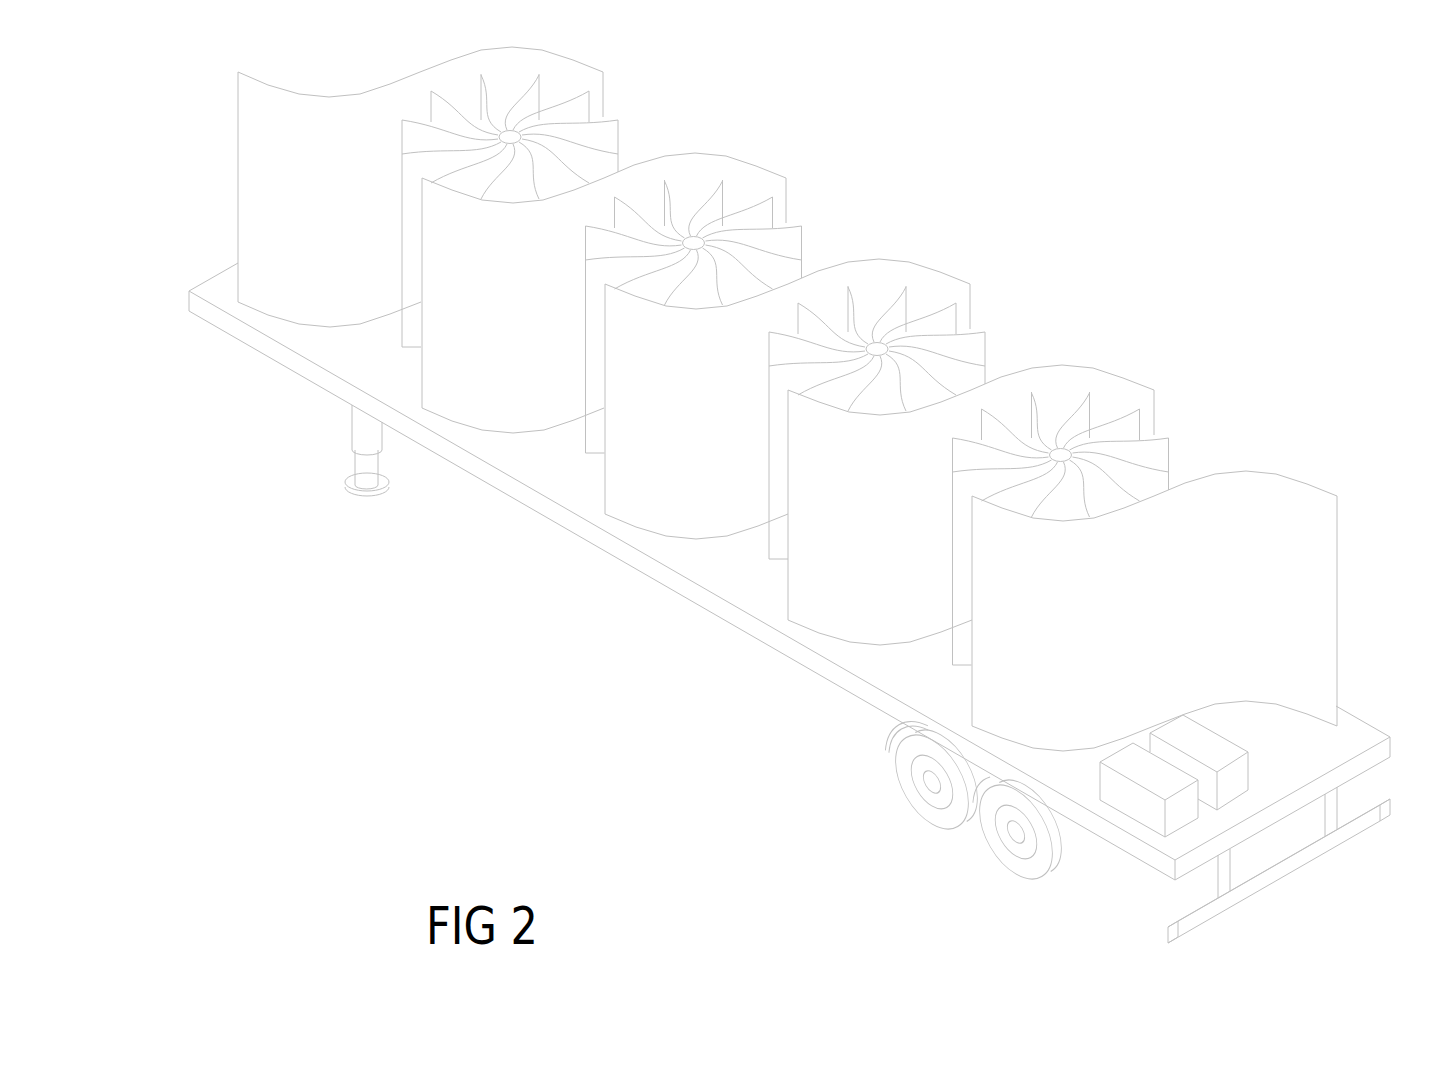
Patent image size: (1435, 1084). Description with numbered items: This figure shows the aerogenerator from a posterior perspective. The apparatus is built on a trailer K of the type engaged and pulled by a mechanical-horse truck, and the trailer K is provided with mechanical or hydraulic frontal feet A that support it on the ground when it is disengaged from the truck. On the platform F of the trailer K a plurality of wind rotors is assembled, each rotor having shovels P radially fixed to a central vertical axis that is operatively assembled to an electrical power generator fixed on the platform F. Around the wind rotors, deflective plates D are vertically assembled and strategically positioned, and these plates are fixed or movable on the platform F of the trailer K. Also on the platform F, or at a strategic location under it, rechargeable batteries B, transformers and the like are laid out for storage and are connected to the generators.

The frontal feet A is at (357, 438).
The shovels P is at (982, 347).
The deflective plates D is at (1289, 510).
The platform F is at (1357, 737).
The trailer K is at (536, 656).
The batteries B is at (1142, 803).